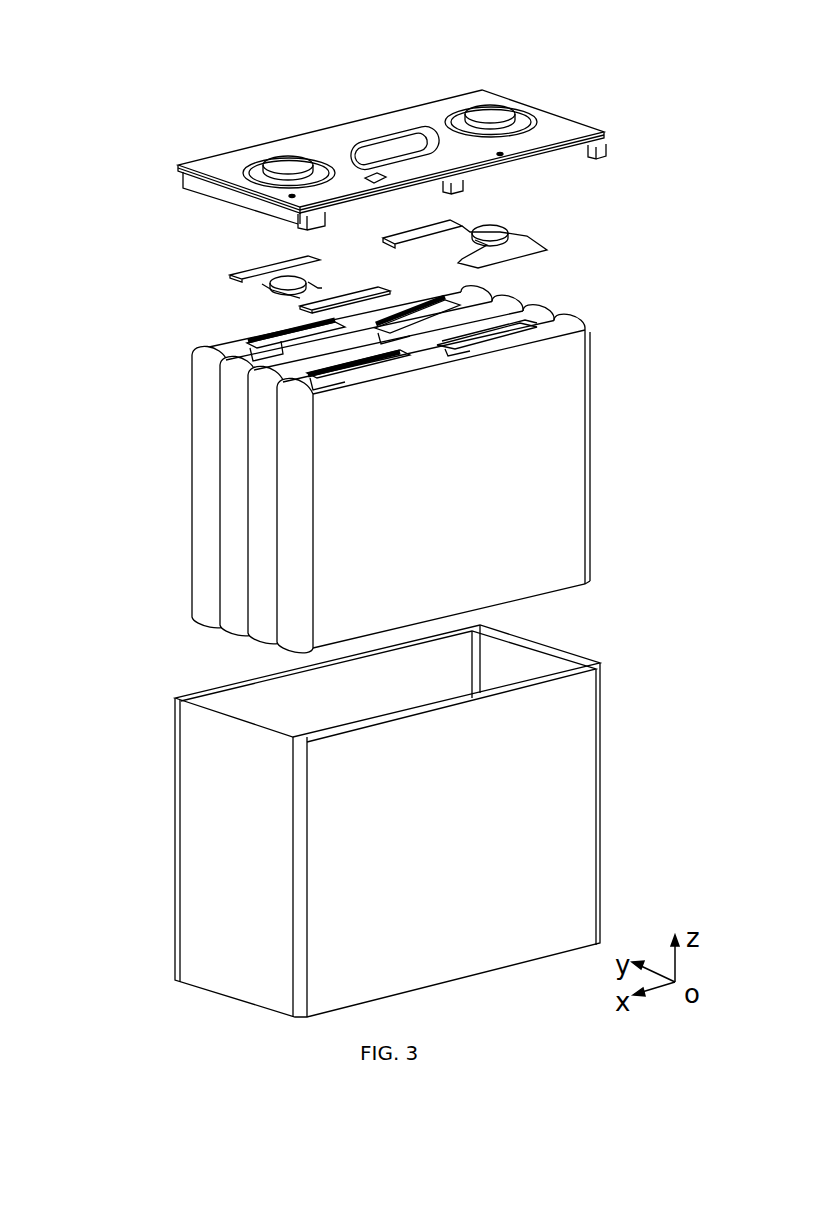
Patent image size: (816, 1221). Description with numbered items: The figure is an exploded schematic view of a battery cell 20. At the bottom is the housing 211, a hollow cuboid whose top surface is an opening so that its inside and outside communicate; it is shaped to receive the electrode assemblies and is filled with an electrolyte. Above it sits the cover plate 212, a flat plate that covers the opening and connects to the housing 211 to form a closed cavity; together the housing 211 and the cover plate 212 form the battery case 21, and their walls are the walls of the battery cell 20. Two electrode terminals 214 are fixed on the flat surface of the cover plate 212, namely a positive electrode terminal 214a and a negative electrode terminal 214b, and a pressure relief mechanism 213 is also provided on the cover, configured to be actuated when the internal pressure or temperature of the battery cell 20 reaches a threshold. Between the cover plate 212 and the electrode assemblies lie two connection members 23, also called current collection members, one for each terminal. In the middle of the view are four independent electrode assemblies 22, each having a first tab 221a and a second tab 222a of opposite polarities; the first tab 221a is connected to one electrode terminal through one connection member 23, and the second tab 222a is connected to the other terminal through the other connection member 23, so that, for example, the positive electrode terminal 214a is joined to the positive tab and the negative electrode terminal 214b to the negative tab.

The battery cell 20 is at (206, 27).
The battery case 21 is at (175, 697).
The housing 211 is at (548, 793).
The cover plate 212 is at (598, 148).
The pressure relief mechanism 213 is at (437, 153).
The electrode terminal 214 is at (452, 30).
The positive electrode terminal 214a is at (287, 165).
The negative electrode terminal 214b is at (489, 113).
The electrode assembly 22 is at (530, 468).
The first tab 221a is at (197, 364).
The second tab 222a is at (573, 332).
The connection member 23 is at (232, 283).